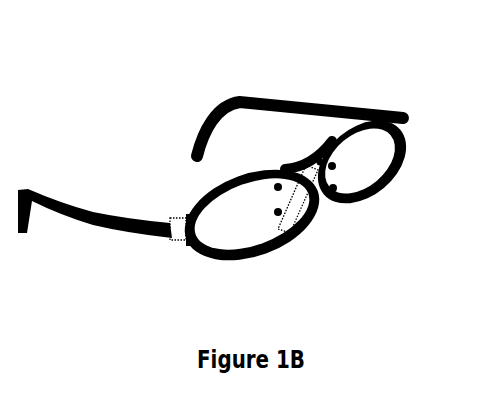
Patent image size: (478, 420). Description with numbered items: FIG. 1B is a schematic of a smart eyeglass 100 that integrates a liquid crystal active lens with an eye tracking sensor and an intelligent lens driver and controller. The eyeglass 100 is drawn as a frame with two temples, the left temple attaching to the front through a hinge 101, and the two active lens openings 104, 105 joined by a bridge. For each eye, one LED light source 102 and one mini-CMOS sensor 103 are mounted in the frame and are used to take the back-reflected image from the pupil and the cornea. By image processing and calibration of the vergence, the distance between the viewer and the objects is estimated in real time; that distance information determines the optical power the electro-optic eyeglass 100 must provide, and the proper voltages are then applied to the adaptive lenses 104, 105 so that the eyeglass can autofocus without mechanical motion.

The eyeglasses frame 100 is at (220, 189).
The hinge 101 is at (182, 228).
The LED light source 102 is at (327, 198).
The mini-CMOS sensor 103 is at (319, 162).
The left lens 104 is at (253, 230).
The right lens 105 is at (365, 171).